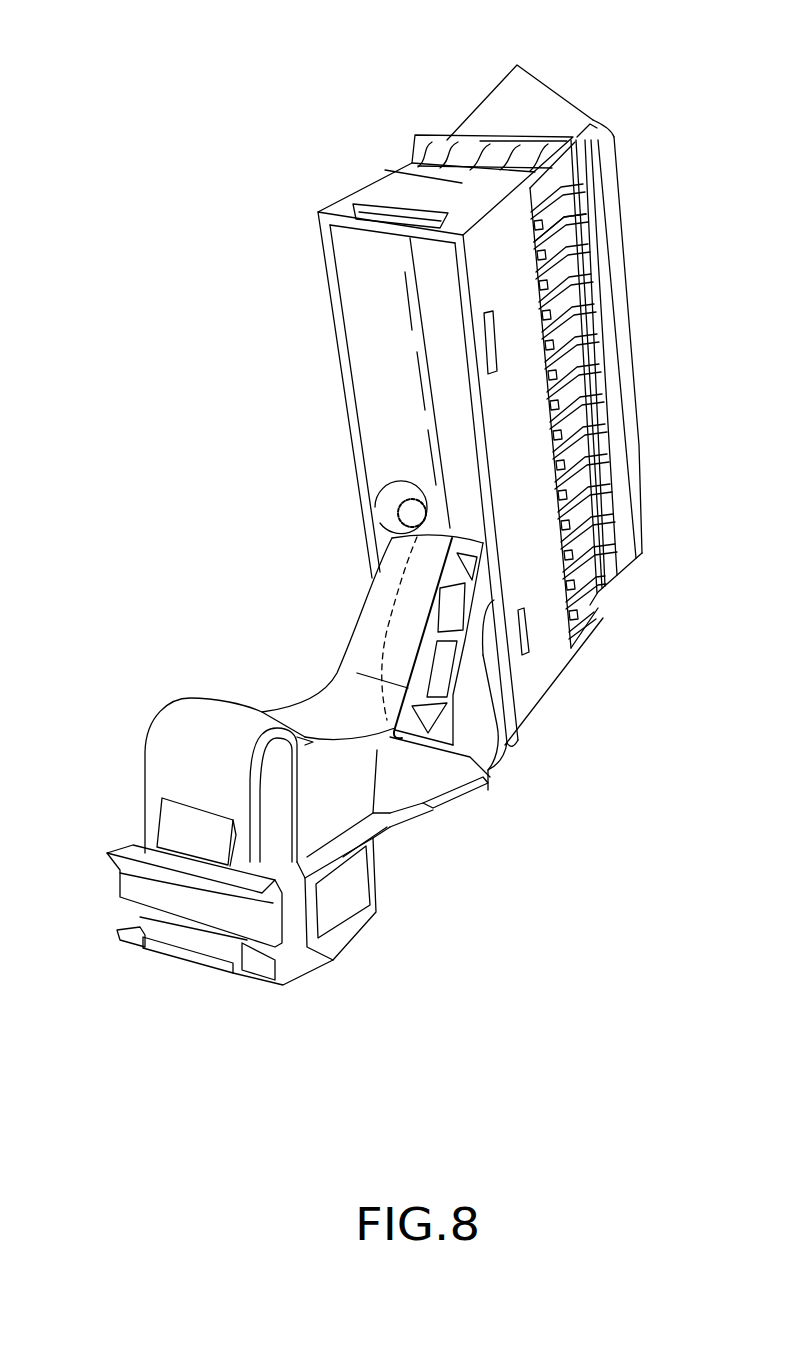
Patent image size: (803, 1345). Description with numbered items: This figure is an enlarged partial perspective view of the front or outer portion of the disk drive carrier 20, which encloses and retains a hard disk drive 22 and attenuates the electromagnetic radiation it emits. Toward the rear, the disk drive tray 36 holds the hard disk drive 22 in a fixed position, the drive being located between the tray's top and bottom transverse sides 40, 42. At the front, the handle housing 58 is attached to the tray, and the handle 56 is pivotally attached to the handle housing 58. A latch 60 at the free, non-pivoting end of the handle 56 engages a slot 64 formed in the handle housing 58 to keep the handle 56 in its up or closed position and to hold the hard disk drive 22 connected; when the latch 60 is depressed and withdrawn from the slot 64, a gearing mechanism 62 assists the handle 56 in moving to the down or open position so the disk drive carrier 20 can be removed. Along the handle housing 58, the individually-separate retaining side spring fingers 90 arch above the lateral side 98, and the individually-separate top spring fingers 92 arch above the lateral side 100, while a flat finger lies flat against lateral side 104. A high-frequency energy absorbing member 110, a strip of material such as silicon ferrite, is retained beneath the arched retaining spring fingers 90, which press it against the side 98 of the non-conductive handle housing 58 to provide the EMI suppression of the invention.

The disk drive carrier 20 is at (182, 602).
The hard disk drive 22 is at (610, 178).
The disk drive tray 36 is at (495, 96).
The top transverse side 40 is at (545, 106).
The bottom transverse side 42 is at (638, 560).
The handle 56 is at (305, 955).
The handle housing 58 is at (512, 708).
The latch 60 is at (157, 818).
The gearing mechanism 62 is at (400, 512).
The slot 64 is at (358, 210).
The retaining side spring fingers 90 is at (560, 197).
The top spring fingers 92 is at (518, 147).
The side of handle housing 98 is at (545, 676).
The side of handle housing 100 is at (392, 170).
The side of handle housing 104 is at (350, 282).
The high-frequency energy absorbing member 110 is at (560, 268).